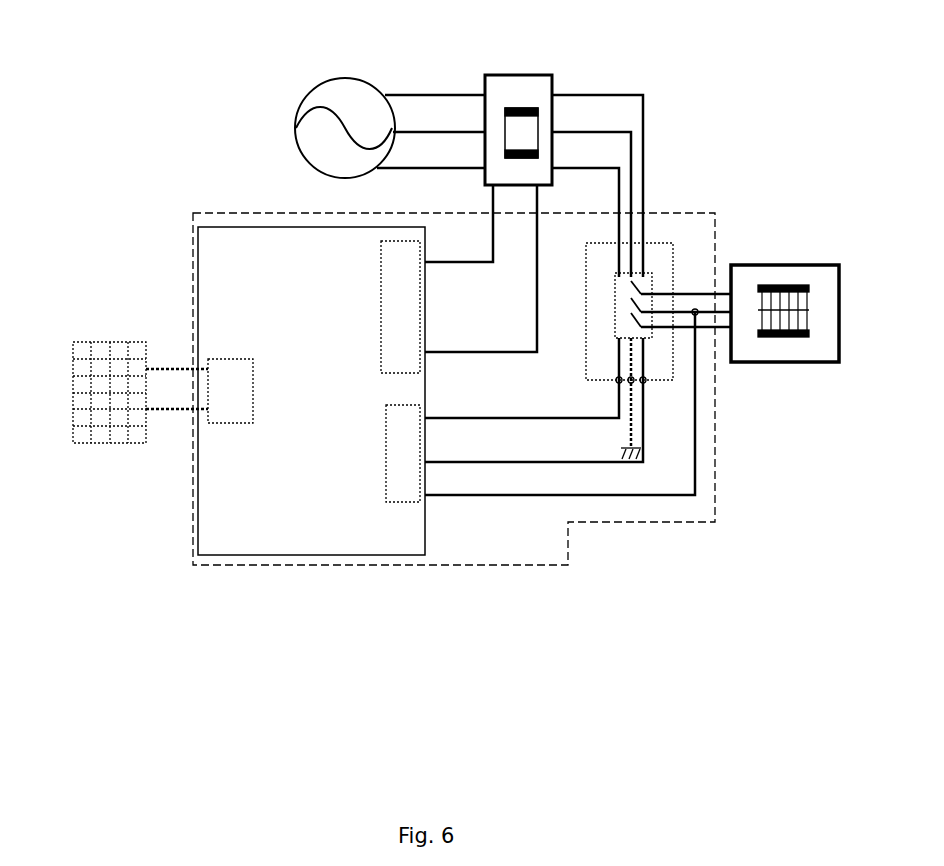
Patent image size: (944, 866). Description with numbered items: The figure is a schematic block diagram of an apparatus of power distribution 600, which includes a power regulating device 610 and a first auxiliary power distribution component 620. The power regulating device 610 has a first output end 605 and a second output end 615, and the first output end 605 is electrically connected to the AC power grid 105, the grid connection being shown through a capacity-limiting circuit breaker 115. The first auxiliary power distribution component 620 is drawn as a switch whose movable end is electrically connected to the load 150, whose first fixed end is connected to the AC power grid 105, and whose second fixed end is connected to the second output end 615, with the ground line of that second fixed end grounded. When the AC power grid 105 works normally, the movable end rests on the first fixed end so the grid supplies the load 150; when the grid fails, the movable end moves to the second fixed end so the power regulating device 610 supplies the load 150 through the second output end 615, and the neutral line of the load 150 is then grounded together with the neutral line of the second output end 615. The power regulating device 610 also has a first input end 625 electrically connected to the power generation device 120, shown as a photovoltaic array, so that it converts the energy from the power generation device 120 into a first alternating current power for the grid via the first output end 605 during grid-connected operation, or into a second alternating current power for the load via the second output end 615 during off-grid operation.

The AC power grid 105 is at (356, 102).
The capacity-limiting circuit breaker 115 is at (538, 105).
The power generation device 120 is at (91, 366).
The load 150 is at (795, 293).
The apparatus of power distribution 600 is at (491, 389).
The first output end 605 is at (438, 307).
The power regulating device 610 is at (311, 368).
The second output end 615 is at (440, 448).
The first auxiliary power distribution component 620 is at (648, 313).
The first input end 625 is at (202, 371).